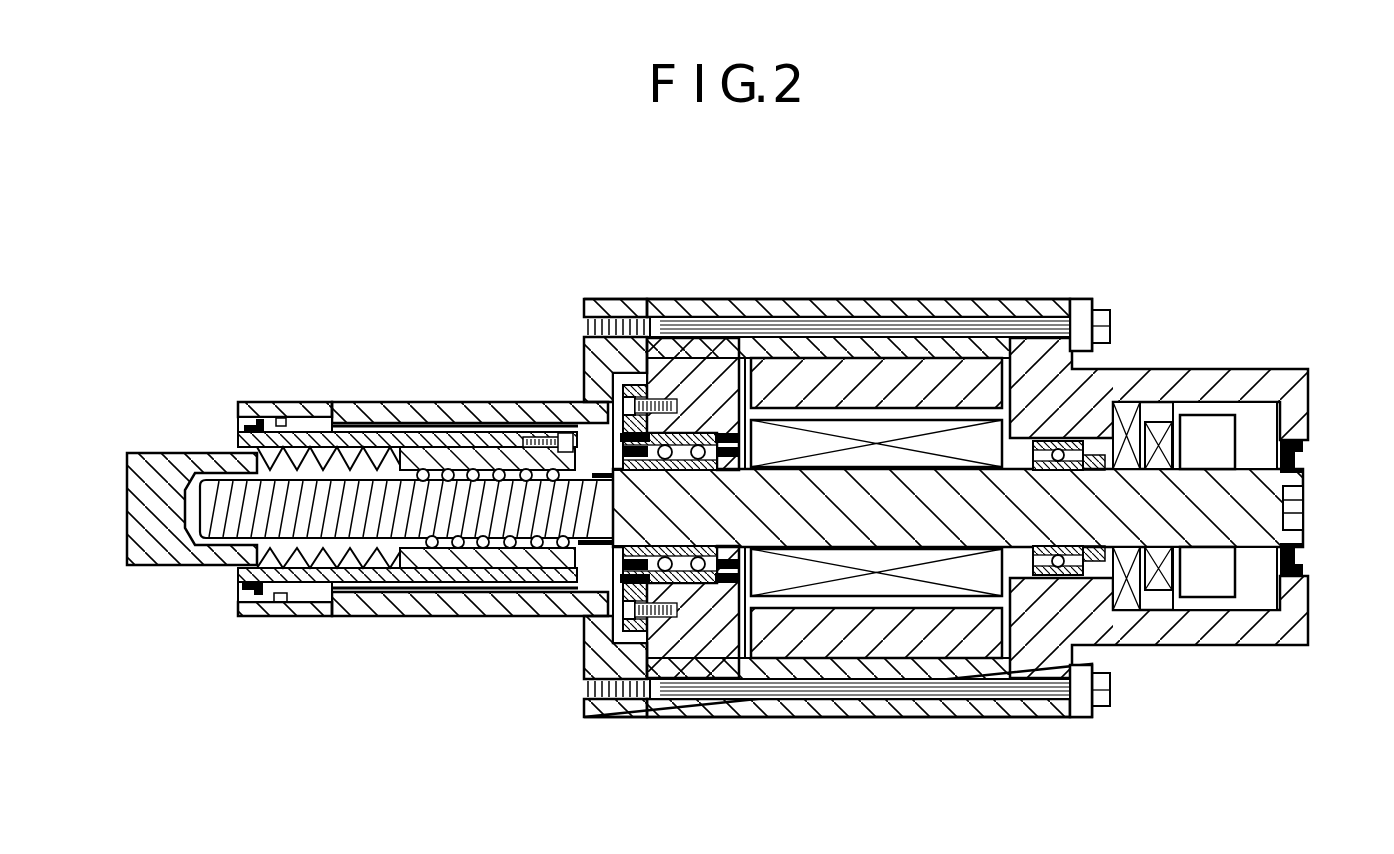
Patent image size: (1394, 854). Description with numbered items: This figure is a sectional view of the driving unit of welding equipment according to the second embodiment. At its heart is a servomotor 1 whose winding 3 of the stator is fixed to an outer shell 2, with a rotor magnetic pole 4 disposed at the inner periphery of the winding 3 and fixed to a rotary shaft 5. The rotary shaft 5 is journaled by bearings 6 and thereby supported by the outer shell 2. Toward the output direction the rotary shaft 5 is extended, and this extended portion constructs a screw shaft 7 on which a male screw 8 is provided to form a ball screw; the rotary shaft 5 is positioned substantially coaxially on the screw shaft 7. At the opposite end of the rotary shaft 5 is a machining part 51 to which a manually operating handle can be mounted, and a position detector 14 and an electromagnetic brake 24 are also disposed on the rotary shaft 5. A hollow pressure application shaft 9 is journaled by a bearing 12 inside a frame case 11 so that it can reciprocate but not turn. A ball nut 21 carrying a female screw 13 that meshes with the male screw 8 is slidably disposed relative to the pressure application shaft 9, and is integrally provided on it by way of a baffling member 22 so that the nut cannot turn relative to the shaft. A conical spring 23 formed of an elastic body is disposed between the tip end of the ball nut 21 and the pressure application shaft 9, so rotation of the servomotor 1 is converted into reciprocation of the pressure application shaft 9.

The servomotor 1 is at (764, 290).
The outer shell 2 is at (693, 308).
The winding 3 is at (908, 633).
The rotor magnetic pole 4 is at (840, 575).
The rotary shaft 5 is at (975, 520).
The bearings 6 is at (695, 580).
The screw shaft 7 is at (586, 520).
The male screw 8 is at (318, 495).
The pressure application shaft 9 is at (148, 511).
The frame case 11 is at (470, 415).
The bearing 12 is at (320, 600).
The female screw 13 is at (428, 470).
The position detector 14 is at (1210, 570).
The ball nut 21 is at (432, 562).
The baffling member 22 is at (552, 440).
The conical spring 23 is at (376, 466).
The electromagnetic brake 24 is at (1158, 435).
The machining part 51 is at (1305, 500).